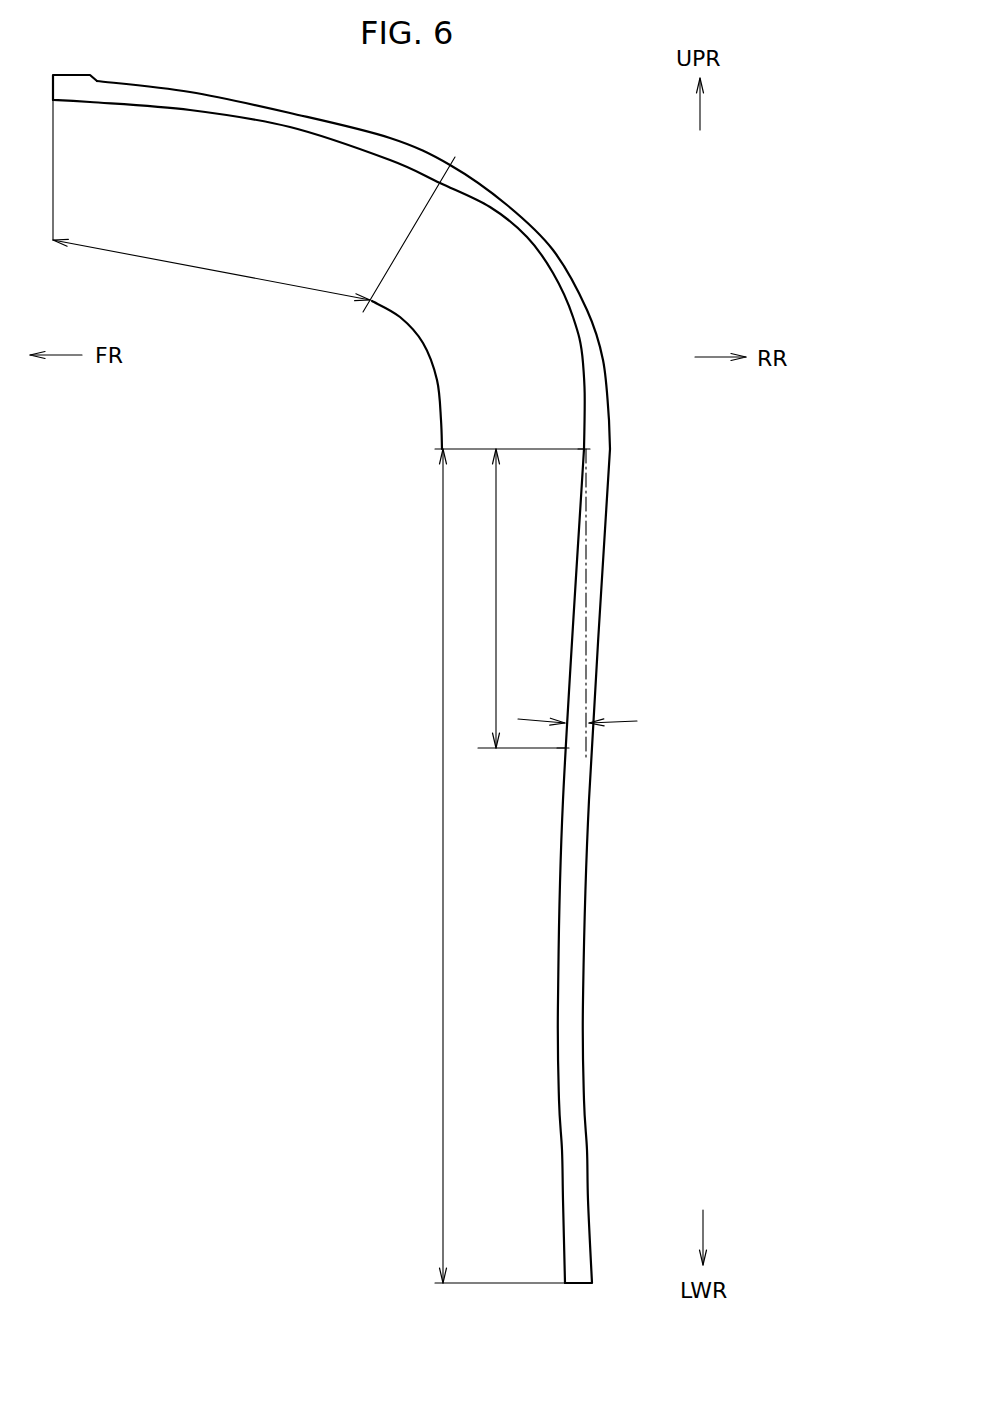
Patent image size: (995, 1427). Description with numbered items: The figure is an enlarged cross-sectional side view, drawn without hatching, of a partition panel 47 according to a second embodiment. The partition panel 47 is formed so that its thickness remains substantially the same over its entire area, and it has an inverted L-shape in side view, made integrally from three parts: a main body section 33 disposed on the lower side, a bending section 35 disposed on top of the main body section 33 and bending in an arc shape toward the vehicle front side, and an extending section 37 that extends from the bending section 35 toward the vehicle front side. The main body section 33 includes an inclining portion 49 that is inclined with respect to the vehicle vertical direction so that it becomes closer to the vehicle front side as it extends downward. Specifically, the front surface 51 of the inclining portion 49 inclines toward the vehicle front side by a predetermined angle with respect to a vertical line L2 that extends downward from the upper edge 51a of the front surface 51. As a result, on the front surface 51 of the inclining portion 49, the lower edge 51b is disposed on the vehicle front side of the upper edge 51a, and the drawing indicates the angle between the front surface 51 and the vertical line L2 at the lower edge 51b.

The main body section 33 is at (443, 717).
The bending section 35 is at (422, 345).
The extending section 37 is at (162, 261).
The partition panel 47 is at (575, 233).
The inclining portion 49 is at (513, 598).
The front surface 51 is at (569, 566).
The upper edge 51a is at (586, 466).
The lower edge 51b is at (560, 766).
The vertical line L2 is at (585, 661).